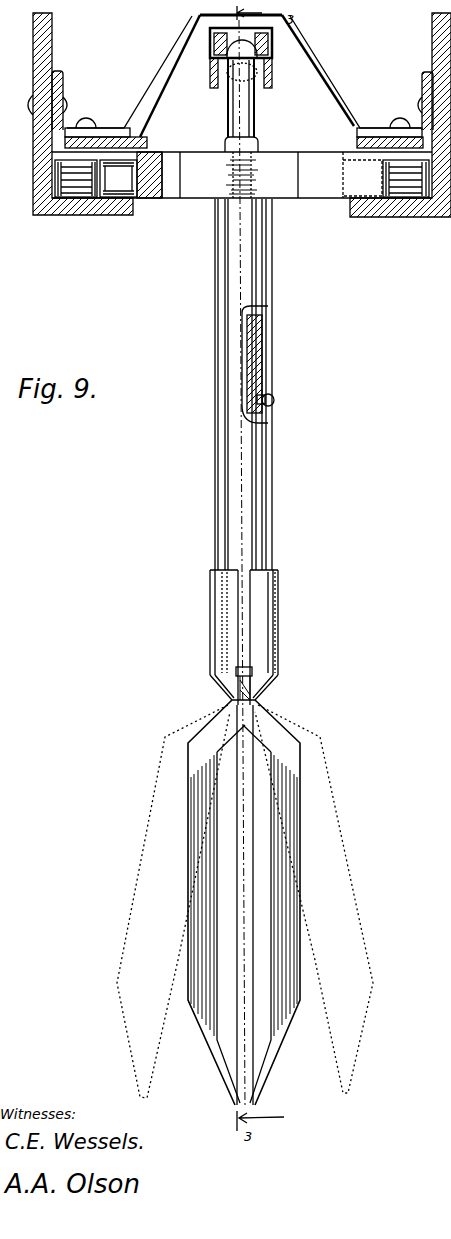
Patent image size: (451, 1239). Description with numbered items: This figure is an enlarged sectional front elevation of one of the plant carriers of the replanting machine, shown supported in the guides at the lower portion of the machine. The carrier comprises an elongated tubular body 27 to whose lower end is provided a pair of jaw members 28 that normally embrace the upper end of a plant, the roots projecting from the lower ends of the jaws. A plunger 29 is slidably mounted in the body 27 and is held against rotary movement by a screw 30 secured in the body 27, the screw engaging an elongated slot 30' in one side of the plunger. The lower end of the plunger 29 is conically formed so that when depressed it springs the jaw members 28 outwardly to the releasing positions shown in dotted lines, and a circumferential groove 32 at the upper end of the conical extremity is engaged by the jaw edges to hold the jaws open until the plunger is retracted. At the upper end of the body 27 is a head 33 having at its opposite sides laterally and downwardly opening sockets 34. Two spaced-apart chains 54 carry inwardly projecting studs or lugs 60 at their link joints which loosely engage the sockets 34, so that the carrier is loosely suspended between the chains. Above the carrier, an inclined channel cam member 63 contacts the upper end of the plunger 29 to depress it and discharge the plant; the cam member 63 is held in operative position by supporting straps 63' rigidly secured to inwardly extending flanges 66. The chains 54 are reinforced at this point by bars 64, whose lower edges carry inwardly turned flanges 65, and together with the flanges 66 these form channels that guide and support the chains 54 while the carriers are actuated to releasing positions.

The tubular body 27 is at (241, 518).
The jaw members 28 is at (197, 813).
The plunger 29 is at (244, 117).
The screw 30 is at (285, 401).
The elongated slot 30' is at (278, 364).
The circumferential groove 32 is at (252, 671).
The head 33 is at (314, 192).
The sockets 34 is at (143, 151).
The chains 54 is at (73, 183).
The studs or lugs 60 is at (112, 196).
The channel cam member 63 is at (275, 58).
The supporting straps 63' is at (243, 76).
The bars 64 is at (43, 40).
The inwardly turned flanges 65 is at (127, 216).
The inwardly extending flanges 66 is at (104, 127).